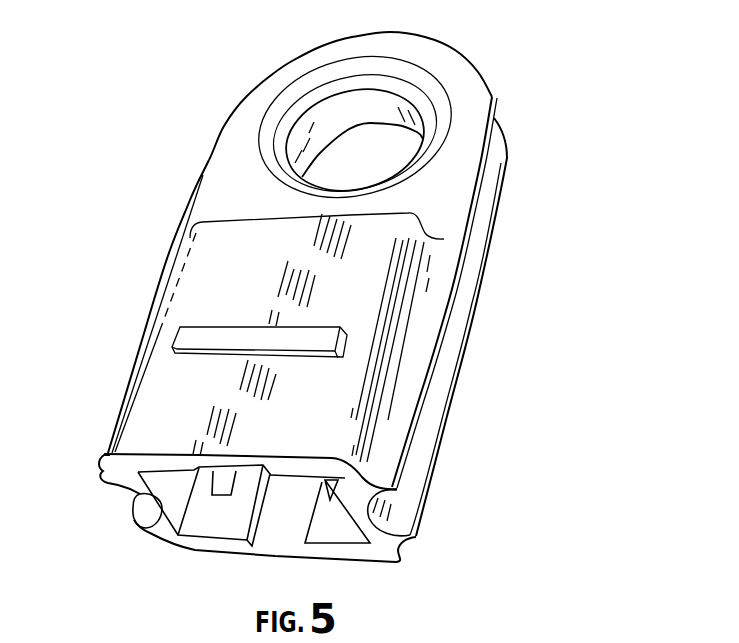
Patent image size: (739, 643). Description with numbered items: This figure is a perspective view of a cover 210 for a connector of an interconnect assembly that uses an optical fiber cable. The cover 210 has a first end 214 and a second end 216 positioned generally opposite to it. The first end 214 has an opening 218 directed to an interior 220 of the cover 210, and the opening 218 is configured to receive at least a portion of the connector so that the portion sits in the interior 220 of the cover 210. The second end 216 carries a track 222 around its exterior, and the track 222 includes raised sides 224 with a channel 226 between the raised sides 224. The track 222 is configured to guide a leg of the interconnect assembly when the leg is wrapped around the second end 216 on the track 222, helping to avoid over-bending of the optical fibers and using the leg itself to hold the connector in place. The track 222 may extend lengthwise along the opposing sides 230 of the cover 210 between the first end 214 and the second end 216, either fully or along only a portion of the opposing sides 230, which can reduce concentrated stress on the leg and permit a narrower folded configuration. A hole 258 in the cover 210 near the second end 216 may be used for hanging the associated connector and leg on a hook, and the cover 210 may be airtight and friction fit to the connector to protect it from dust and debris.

The cover 210 is at (514, 280).
The first end 214 is at (427, 589).
The second end 216 is at (499, 69).
The opening 218 is at (172, 500).
The interior 220 is at (178, 495).
The track 222 is at (488, 193).
The raised sides 224 is at (400, 484).
The channel 226 is at (384, 511).
The opposing sides 230 is at (135, 292).
The hole 258 is at (323, 127).